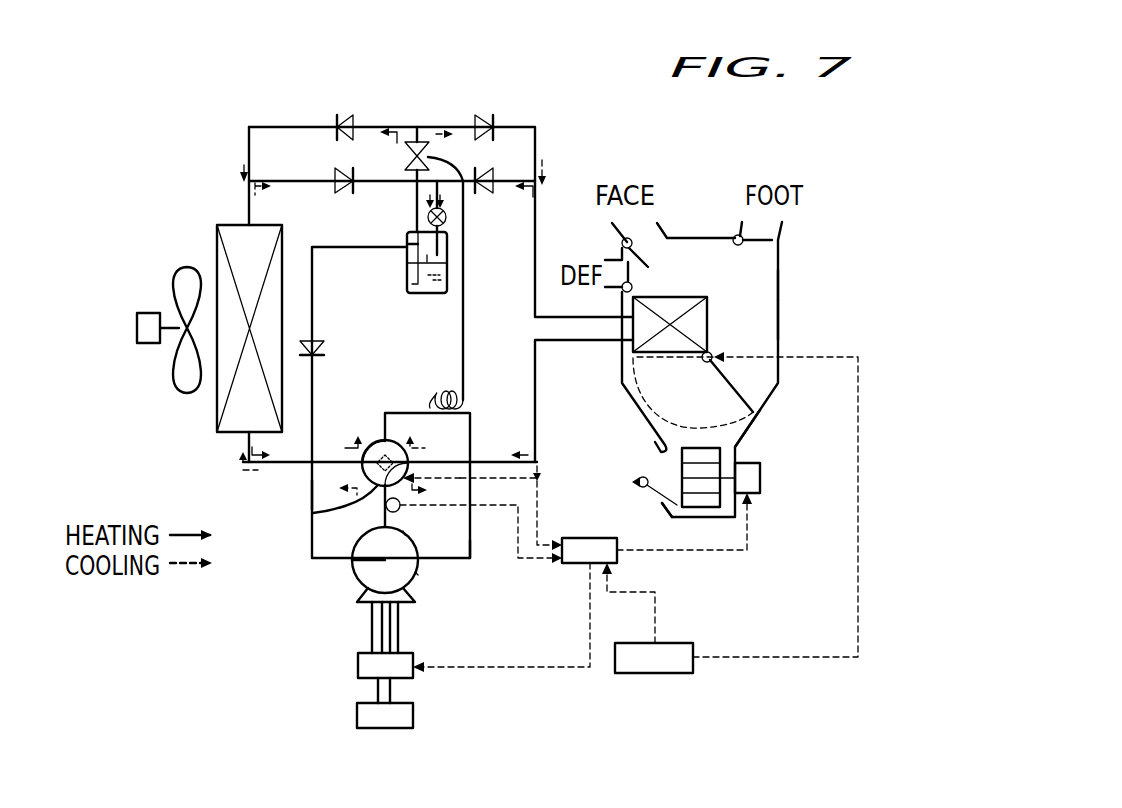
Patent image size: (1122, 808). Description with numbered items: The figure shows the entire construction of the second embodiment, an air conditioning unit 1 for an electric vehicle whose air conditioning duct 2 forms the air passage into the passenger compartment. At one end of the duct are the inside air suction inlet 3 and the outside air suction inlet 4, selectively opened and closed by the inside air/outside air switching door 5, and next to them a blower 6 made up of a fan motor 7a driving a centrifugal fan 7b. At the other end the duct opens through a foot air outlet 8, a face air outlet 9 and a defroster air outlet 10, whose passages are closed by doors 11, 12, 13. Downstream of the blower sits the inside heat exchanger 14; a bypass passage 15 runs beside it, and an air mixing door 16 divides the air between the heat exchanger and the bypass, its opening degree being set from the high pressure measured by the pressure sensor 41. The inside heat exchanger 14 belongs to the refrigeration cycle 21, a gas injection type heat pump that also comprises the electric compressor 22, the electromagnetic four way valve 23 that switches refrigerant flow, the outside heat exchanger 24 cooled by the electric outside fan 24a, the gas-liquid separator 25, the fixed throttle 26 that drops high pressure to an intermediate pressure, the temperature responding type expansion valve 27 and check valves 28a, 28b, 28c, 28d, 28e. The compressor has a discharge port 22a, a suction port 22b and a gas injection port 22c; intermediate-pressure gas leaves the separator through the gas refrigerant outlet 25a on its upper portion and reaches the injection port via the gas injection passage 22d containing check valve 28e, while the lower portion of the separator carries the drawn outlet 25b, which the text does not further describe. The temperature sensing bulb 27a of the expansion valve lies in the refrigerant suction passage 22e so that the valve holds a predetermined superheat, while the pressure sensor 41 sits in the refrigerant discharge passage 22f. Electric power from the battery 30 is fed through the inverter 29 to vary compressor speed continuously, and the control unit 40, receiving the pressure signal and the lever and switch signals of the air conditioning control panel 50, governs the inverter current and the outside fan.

The air conditioning unit 1 is at (792, 339).
The air conditioning duct 2 is at (779, 285).
The inside air suction inlet 3 is at (658, 466).
The outside air suction inlet 4 is at (641, 489).
The inside air/outside air switching door 5 is at (662, 503).
The blower 6 is at (733, 439).
The fan motor 7a is at (753, 480).
The centrifugal fan 7b is at (708, 457).
The foot air outlet 8 is at (773, 222).
The face air outlet 9 is at (630, 220).
The defroster air outlet 10 is at (605, 287).
The door 11 is at (757, 247).
The door 12 is at (648, 258).
The door 13 is at (632, 278).
The inside heat exchanger 14 is at (709, 315).
The bypass passage 15 is at (733, 330).
The air mixing door 16 is at (733, 387).
The refrigeration cycle 21 is at (224, 187).
The compressor 22 is at (354, 584).
The discharge port 22a is at (403, 531).
The suction port 22b is at (418, 571).
The gas injection port 22c is at (353, 560).
The gas injection passage 22d is at (312, 493).
The refrigerant suction passage 22e is at (473, 550).
The refrigerant discharge passage 22f is at (373, 496).
The electromagnetic four way valve 23 is at (313, 515).
The outside heat exchanger 24 is at (217, 246).
The electric outside fan 24a is at (176, 370).
The gas-liquid separator 25 is at (408, 258).
The gas refrigerant outlet 25a is at (407, 245).
The receiver outlet 25b is at (412, 284).
The fixed throttle 26 is at (446, 219).
The temperature responding type expansion valve 27 is at (410, 155).
The temperature sensing bulb 27a is at (433, 396).
The check valve 28a is at (486, 114).
The check valve 28b is at (494, 175).
The check valve 28c is at (339, 115).
The check valve 28d is at (337, 190).
The check valve 28e is at (322, 350).
The inverter 29 is at (358, 668).
The battery 30 is at (413, 710).
The control unit 40 is at (575, 538).
The pressure sensor 41 is at (400, 508).
The air conditioning control panel 50 is at (655, 673).